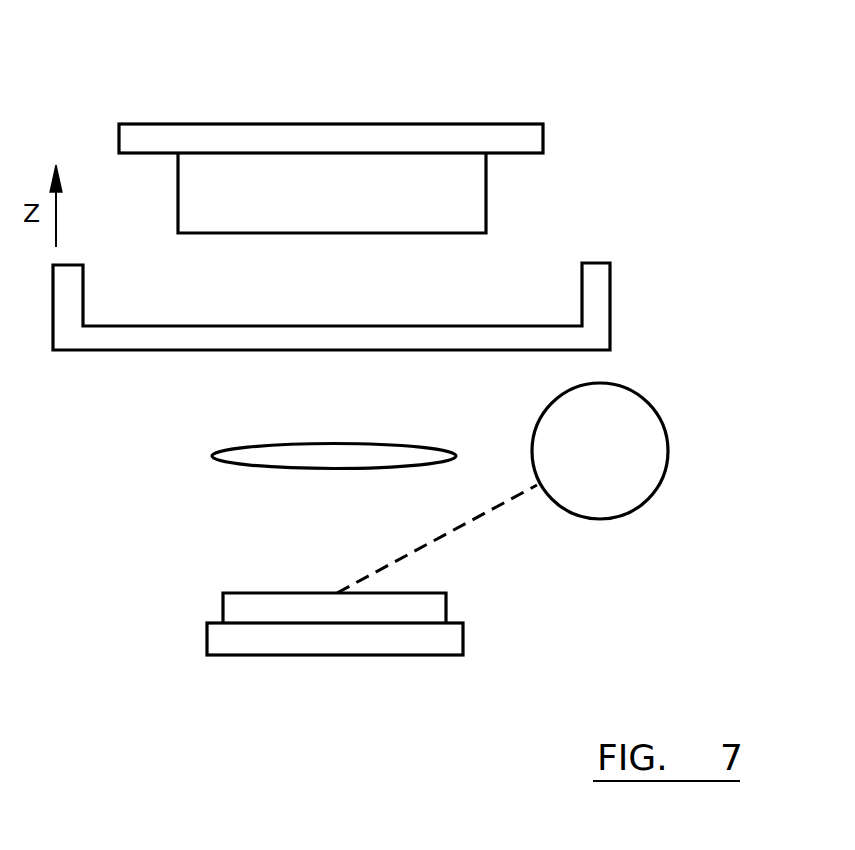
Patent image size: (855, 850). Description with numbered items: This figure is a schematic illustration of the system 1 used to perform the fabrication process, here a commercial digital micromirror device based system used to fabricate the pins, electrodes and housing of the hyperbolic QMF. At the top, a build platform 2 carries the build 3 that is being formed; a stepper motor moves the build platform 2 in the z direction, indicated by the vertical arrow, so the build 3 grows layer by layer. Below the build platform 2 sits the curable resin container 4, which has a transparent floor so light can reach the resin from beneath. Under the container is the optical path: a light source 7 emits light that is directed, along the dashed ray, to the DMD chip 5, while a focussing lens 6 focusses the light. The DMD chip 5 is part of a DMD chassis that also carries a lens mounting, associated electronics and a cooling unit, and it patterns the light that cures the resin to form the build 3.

The system 1 is at (577, 102).
The build platform 2 is at (435, 124).
The build 3 is at (460, 196).
The curable resin container 4 is at (610, 302).
The DMD chip 5 is at (207, 636).
The focussing lens 6 is at (212, 455).
The light source 7 is at (640, 455).